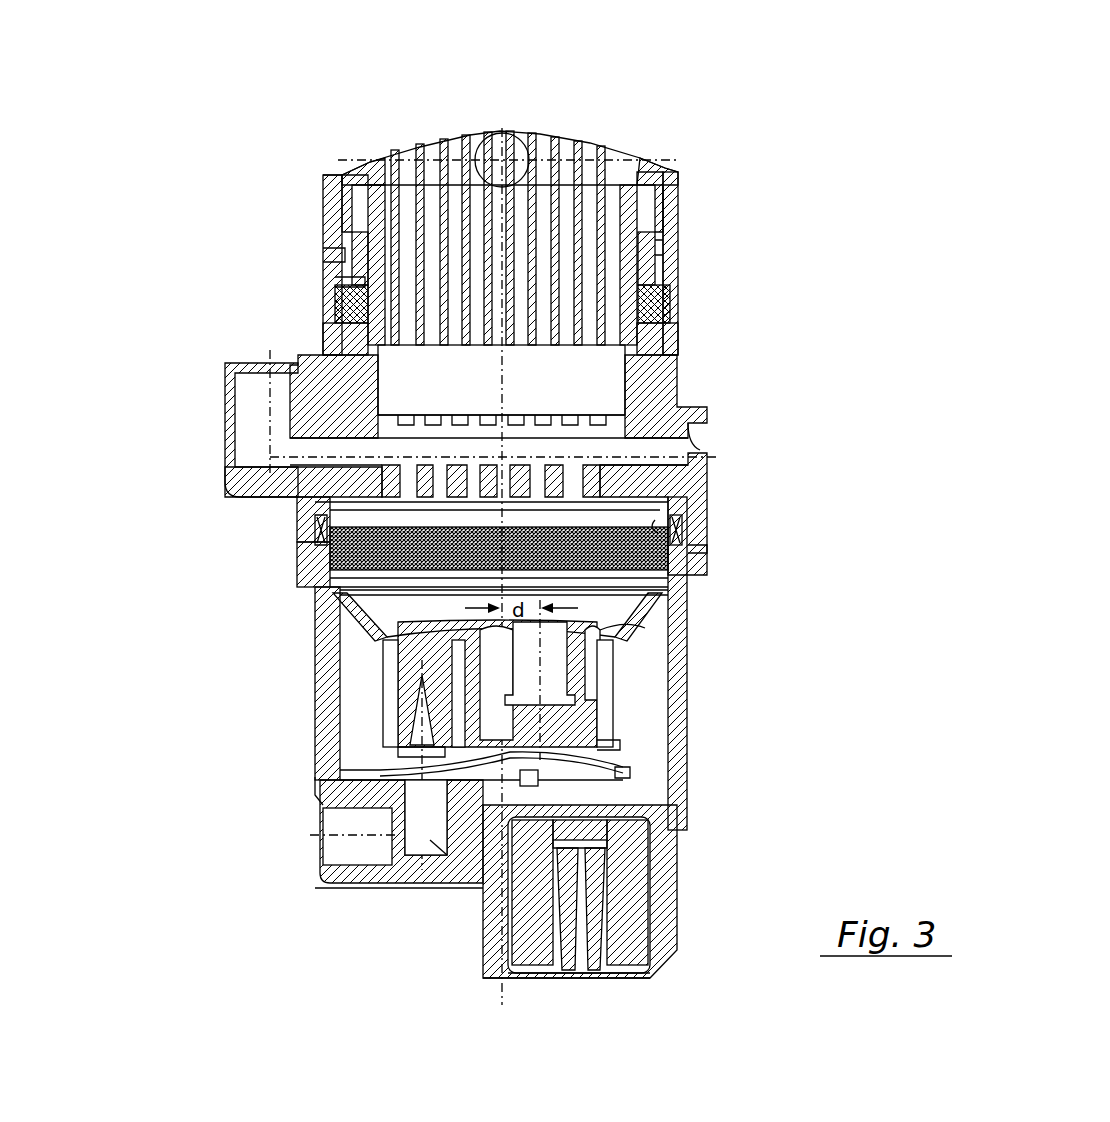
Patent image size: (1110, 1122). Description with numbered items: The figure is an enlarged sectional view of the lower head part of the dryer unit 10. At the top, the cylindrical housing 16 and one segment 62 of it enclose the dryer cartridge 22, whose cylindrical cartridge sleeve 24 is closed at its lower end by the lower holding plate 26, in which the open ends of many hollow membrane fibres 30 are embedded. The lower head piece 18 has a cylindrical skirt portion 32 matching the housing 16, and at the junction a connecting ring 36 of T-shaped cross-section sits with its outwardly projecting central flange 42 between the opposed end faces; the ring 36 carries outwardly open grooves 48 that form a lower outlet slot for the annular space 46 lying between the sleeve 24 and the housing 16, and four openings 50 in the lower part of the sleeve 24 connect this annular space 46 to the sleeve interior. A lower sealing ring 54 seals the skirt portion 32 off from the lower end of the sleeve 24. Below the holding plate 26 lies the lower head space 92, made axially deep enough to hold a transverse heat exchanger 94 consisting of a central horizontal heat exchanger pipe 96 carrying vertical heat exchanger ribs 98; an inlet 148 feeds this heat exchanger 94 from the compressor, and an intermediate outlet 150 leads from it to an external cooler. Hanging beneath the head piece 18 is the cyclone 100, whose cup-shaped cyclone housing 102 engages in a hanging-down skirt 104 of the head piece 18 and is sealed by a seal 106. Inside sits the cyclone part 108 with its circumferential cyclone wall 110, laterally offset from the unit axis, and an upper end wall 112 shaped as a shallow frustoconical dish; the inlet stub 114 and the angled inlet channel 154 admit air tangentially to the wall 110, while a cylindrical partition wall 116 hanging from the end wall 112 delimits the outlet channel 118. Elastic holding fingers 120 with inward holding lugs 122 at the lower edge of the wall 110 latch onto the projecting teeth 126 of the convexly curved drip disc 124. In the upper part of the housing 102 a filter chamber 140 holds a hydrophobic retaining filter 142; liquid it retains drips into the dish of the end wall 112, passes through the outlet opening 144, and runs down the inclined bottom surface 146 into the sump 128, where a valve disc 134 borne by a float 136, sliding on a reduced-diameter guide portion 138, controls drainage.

The dryer unit 10 is at (780, 142).
The cylindrical housing 16 is at (320, 193).
The lower head piece 18 is at (678, 383).
The dryer cartridge 22 is at (578, 135).
The cartridge sleeve 24 is at (668, 200).
The lower holding plate 26 is at (555, 150).
The hollow membrane fibres 30 is at (424, 165).
The skirt portion 32 is at (668, 305).
The connecting ring 36 is at (665, 233).
The central flange 42 is at (668, 252).
The annular space 46 is at (350, 183).
The grooves 48 is at (338, 280).
The openings 50 is at (496, 135).
The lower sealing ring 54 is at (345, 305).
The segment of the housing part 62 is at (678, 165).
The lower head space 92 is at (438, 393).
The transverse heat exchanger 94 is at (575, 412).
The heat exchanger pipe 96 is at (458, 425).
The heat exchanger ribs 98 is at (553, 418).
The cyclone 100 is at (277, 714).
The cyclone housing 102 is at (325, 688).
The skirt 104 is at (293, 567).
The seal 106 is at (317, 523).
The cyclone part 108 is at (386, 675).
The cyclone wall 110 is at (610, 725).
The upper end wall 112 is at (640, 622).
The inlet stub 114 is at (400, 765).
The partition wall 116 is at (580, 692).
The outlet channel 118 is at (550, 668).
The holding fingers 120 is at (620, 752).
The holding lugs 122 is at (560, 800).
The drip disc 124 is at (490, 785).
The teeth 126 is at (328, 793).
The sump 128 is at (507, 908).
The valve disc 134 is at (610, 833).
The float 136 is at (633, 908).
The guide portion 138 is at (585, 930).
The filter chamber 140 is at (682, 512).
The retaining filter 142 is at (660, 542).
The outlet opening 144 is at (375, 625).
The inclined bottom surface 146 is at (520, 790).
The inlet 148 is at (700, 435).
The intermediate outlet 150 is at (228, 343).
The inlet channel 154 is at (338, 870).